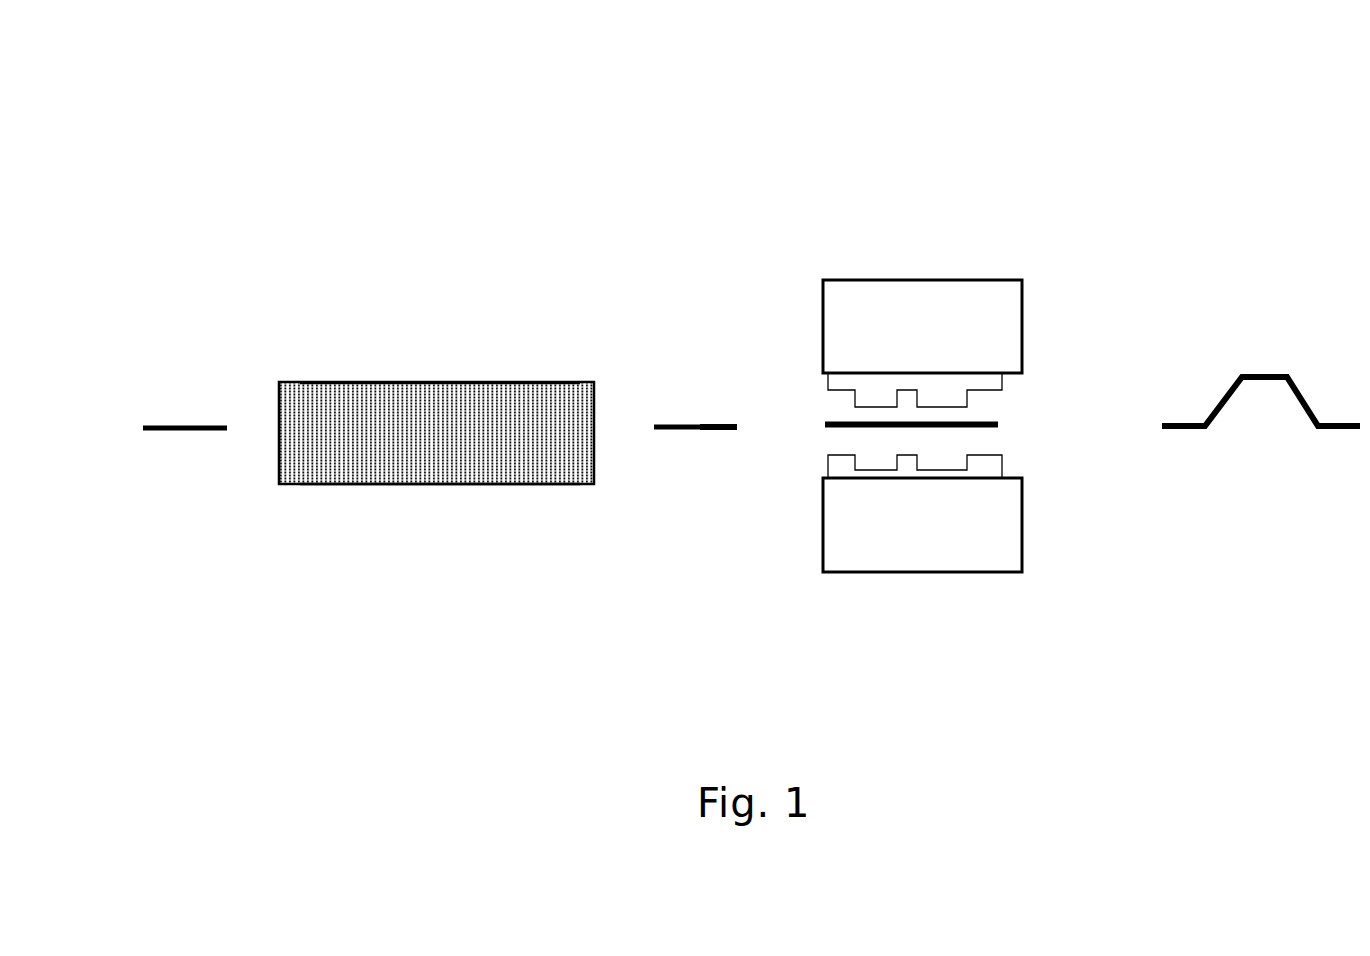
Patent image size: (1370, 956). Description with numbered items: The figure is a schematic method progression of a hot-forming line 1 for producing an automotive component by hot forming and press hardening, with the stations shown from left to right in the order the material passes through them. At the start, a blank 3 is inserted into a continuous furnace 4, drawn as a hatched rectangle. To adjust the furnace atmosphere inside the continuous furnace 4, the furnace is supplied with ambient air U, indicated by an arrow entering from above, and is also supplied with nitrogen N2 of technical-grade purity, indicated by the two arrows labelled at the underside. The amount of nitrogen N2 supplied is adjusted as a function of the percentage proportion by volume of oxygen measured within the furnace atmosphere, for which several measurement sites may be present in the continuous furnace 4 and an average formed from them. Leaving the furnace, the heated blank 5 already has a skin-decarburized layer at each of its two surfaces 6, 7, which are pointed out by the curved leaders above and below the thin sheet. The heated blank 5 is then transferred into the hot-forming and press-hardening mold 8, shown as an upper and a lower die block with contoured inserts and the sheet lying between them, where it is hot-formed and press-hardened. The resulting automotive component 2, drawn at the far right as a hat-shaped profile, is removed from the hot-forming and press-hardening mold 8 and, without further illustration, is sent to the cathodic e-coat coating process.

The hot-forming line 1 is at (517, 132).
The automotive component 2 is at (1268, 333).
The blank 3 is at (183, 414).
The continuous furnace 4 is at (424, 380).
The ambient air U is at (488, 378).
The nitrogen of technical-grade purity N2 is at (337, 488).
The heated blank 5 is at (697, 412).
The surface 6 is at (718, 416).
The surface 7 is at (719, 438).
The hot-forming and press-hardening mold 8 is at (868, 248).